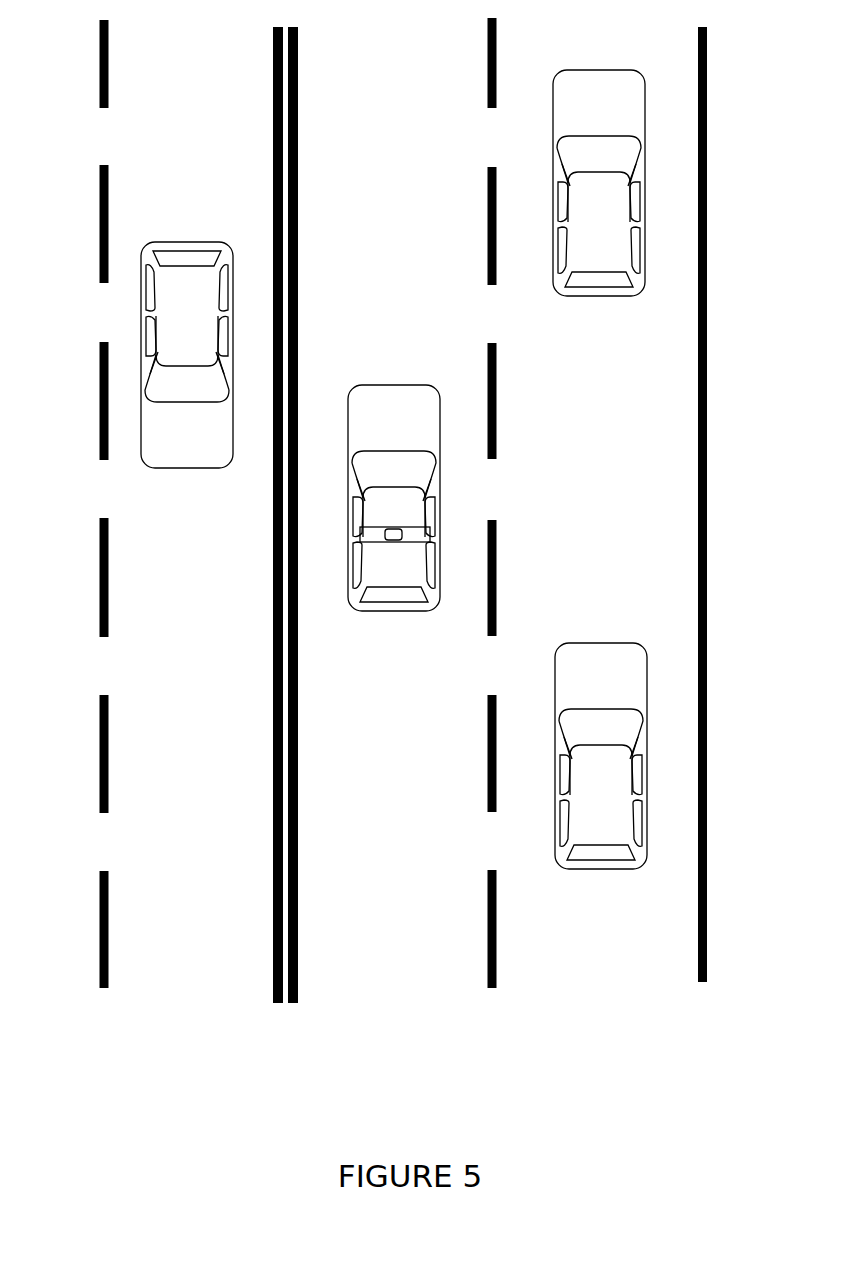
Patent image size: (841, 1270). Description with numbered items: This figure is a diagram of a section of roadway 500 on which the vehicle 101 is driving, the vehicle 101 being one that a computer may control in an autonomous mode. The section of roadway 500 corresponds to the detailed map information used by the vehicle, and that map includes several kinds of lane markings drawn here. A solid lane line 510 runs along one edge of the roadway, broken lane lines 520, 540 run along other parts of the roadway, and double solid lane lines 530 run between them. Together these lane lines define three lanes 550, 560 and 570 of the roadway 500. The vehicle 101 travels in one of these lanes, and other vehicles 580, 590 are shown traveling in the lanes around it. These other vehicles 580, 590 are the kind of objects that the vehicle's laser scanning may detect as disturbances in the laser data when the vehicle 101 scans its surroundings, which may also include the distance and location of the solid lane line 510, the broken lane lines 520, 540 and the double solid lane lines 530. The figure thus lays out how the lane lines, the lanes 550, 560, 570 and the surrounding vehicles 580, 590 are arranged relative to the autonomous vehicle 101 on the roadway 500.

The roadway 500 is at (369, 577).
The solid lane line 510 is at (698, 948).
The broken lane line 520 is at (495, 948).
The double solid lane lines 530 is at (273, 948).
The broken lane line 540 is at (100, 948).
The lane 550 is at (599, 172).
The lane 560 is at (392, 63).
The lane 570 is at (195, 63).
The vehicle 580 is at (142, 320).
The vehicle 590 is at (555, 682).
The vehicle 101 is at (442, 528).